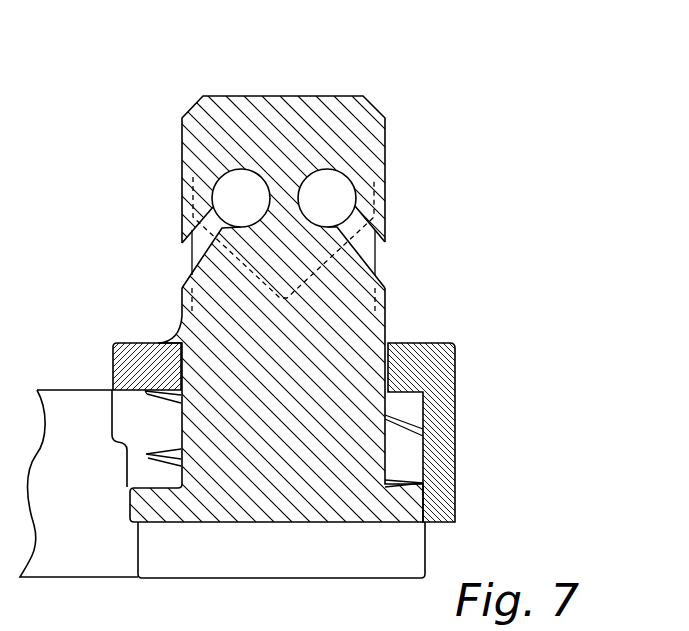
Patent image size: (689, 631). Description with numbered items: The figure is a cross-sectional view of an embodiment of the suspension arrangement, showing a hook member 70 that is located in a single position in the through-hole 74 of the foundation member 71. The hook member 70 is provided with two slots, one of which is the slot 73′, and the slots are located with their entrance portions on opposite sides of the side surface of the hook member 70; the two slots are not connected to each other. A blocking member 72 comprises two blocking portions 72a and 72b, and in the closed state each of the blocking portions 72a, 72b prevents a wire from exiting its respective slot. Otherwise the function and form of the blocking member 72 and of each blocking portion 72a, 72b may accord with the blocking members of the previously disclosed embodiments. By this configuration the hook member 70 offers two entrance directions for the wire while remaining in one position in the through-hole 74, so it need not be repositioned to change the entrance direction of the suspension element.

The hook member 70 is at (350, 122).
The foundation member 71 is at (425, 362).
The blocking member 72 is at (240, 349).
The blocking portion 72a is at (191, 233).
The blocking portion 72b is at (374, 239).
The slot 73′ is at (242, 196).
The through-hole 74 is at (406, 405).